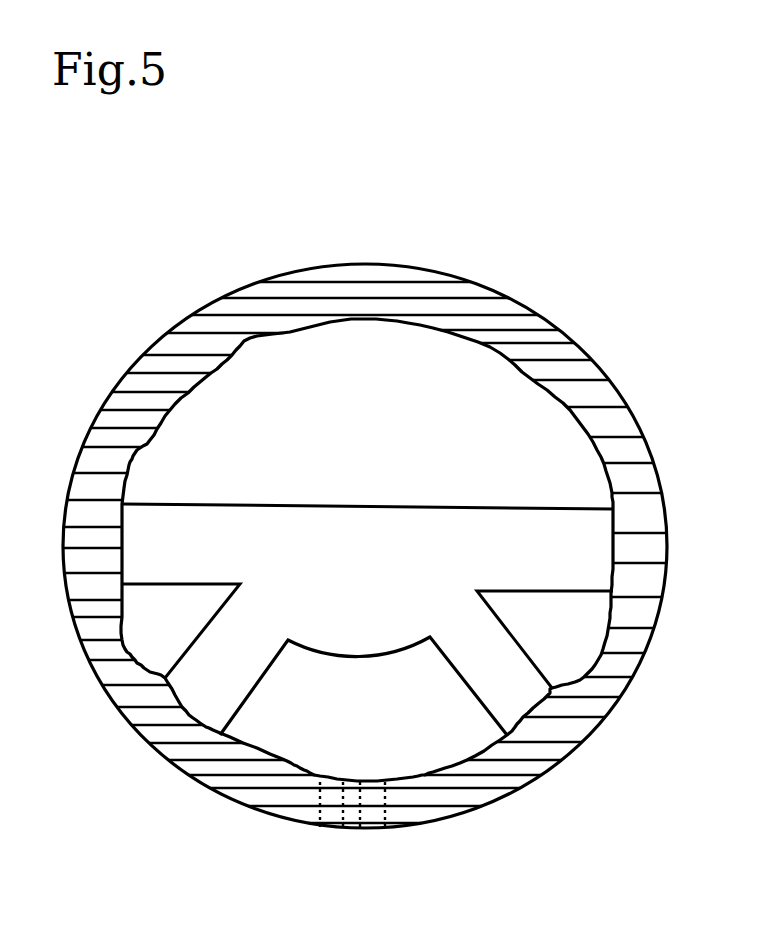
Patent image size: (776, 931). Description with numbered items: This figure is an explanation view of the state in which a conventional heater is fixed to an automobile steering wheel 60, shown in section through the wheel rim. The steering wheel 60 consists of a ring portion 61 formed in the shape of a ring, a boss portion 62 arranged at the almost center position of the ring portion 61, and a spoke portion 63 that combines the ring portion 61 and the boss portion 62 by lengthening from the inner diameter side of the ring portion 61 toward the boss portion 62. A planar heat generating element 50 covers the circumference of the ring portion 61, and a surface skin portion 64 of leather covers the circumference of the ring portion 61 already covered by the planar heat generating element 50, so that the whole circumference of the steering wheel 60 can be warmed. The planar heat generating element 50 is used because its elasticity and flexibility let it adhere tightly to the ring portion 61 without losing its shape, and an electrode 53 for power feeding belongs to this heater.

The steering wheel 60 is at (603, 183).
The planar heat generating element 50 is at (638, 448).
The ring portion 61 is at (583, 372).
The surface skin portion 64 is at (667, 547).
The boss portion 62 is at (360, 520).
The spoke portion 63 is at (193, 513).
The electrode 53 is at (323, 828).